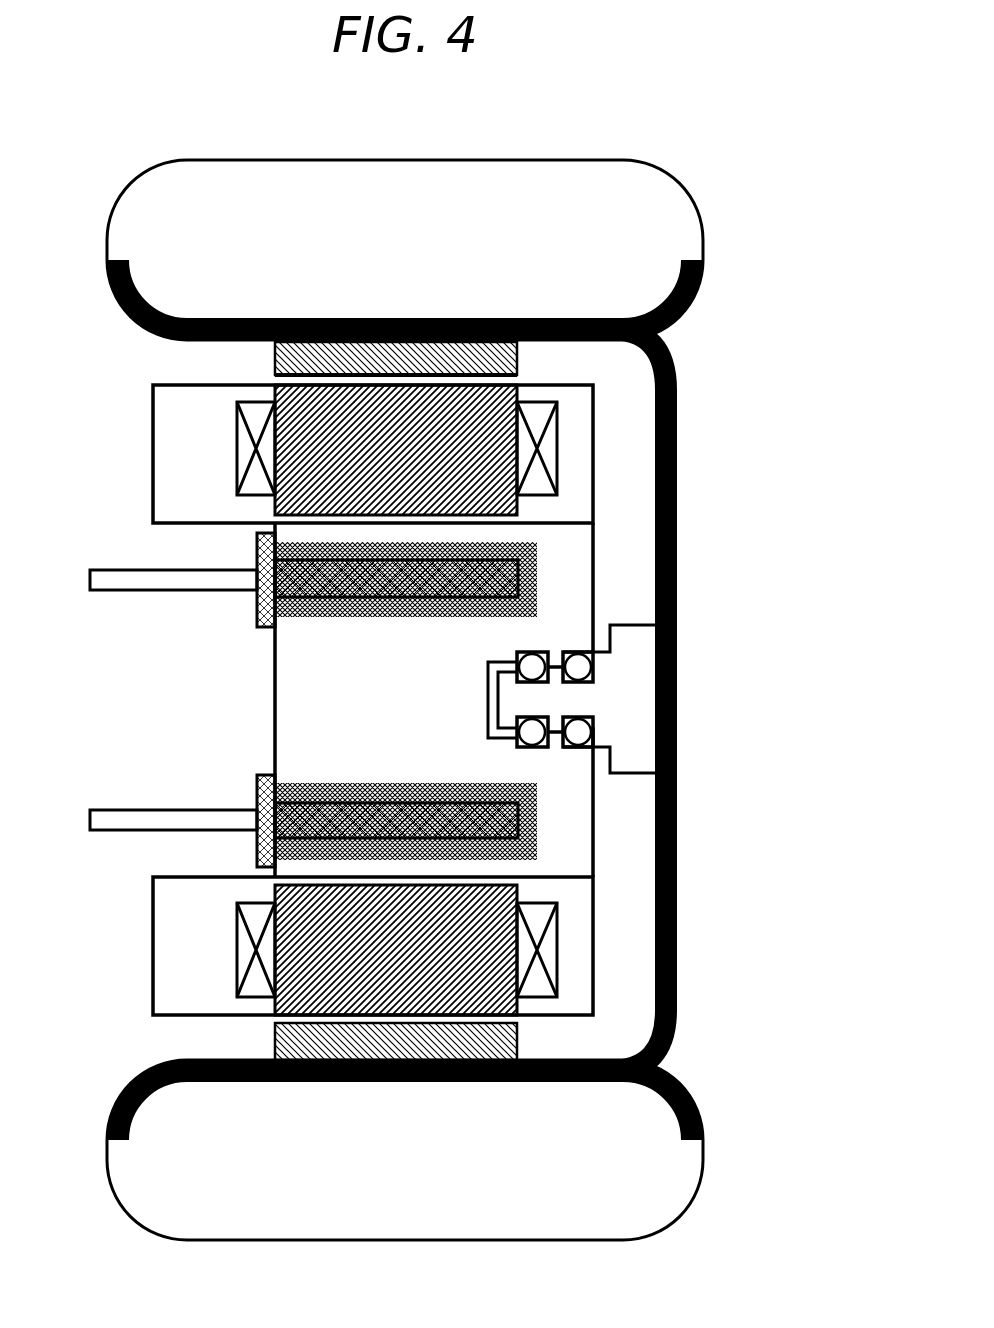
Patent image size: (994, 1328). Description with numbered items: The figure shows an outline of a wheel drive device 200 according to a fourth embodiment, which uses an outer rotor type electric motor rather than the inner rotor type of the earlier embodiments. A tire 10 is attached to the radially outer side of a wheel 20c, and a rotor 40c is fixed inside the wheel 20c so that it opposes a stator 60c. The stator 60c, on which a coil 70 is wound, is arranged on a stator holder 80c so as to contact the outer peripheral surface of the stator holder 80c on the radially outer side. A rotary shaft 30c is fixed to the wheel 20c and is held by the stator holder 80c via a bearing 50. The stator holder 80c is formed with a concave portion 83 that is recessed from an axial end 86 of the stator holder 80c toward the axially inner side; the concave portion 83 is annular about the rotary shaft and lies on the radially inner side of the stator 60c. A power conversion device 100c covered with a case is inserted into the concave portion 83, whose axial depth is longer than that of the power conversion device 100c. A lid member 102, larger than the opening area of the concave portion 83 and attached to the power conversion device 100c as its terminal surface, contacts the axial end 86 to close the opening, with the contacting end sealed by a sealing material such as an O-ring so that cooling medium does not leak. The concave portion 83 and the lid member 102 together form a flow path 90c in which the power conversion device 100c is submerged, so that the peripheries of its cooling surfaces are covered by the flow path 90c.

The wheel drive device 200 is at (668, 130).
The tire 10 is at (697, 212).
The wheel 20c is at (677, 437).
The rotary shaft 30c is at (640, 707).
The rotor 40c is at (510, 1042).
The bearing 50 is at (580, 667).
The stator 60c is at (498, 897).
The coil 70 is at (538, 968).
The stator holder 80c is at (577, 818).
The concave portion 83 is at (538, 577).
The axial end 86 is at (275, 707).
The flow path 90c is at (355, 610).
The power conversion device 100c is at (300, 578).
The lid member 102 is at (260, 597).